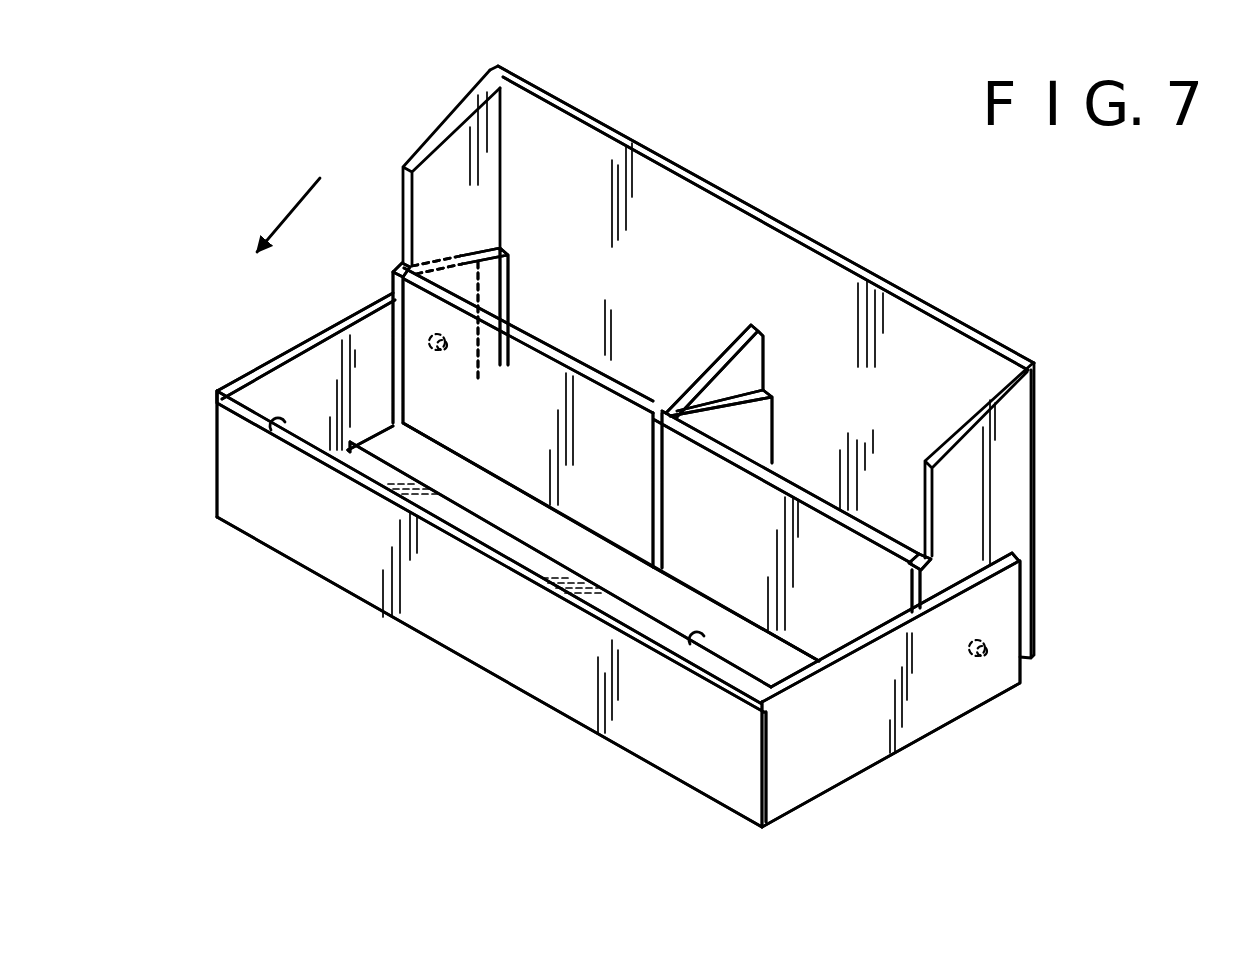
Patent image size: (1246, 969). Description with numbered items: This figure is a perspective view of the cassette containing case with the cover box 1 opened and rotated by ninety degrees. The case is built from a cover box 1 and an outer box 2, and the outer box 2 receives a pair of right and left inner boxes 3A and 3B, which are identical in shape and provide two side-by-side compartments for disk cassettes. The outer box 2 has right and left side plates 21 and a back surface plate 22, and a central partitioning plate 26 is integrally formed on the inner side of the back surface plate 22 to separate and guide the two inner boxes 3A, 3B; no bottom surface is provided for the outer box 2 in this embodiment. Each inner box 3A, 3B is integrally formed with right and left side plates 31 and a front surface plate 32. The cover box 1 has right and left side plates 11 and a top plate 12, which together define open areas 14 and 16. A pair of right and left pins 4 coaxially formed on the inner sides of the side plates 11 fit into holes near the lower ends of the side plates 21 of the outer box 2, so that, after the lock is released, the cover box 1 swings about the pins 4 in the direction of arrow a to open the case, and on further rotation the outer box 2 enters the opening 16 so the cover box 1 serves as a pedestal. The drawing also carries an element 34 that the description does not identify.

The cover box 1 is at (376, 624).
The outer box 2 is at (822, 240).
The right inner box 3A is at (826, 482).
The left inner box 3B is at (569, 345).
The supporting pins 4 is at (447, 353).
The right and left side plates 11 is at (297, 343).
The top plate 12 is at (515, 667).
The open area 14 is at (276, 425).
The open area 16 is at (696, 644).
The right and left side plates 21 is at (452, 150).
The back surface plate 22 is at (735, 197).
The central partitioning plate 26 is at (718, 352).
The right and left side plates 31 is at (498, 272).
The front surface plate 32 is at (605, 415).
The engaging tab 34 is at (435, 267).